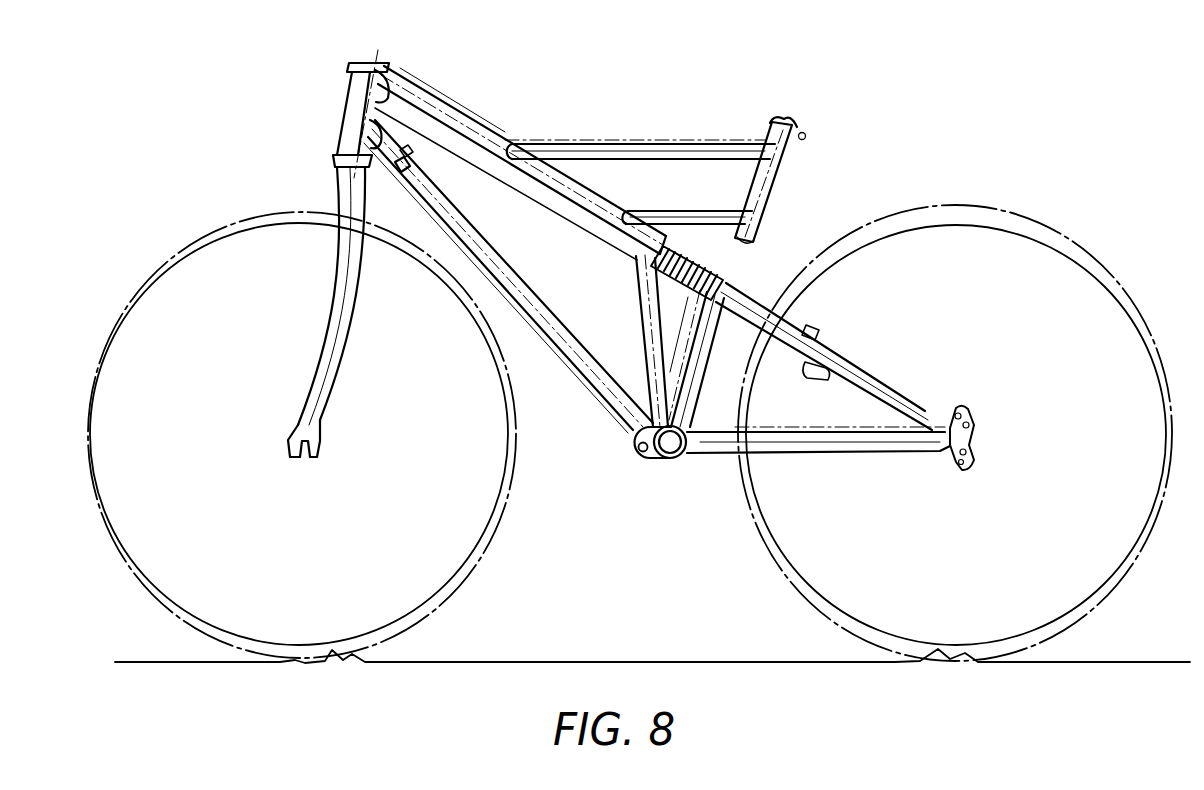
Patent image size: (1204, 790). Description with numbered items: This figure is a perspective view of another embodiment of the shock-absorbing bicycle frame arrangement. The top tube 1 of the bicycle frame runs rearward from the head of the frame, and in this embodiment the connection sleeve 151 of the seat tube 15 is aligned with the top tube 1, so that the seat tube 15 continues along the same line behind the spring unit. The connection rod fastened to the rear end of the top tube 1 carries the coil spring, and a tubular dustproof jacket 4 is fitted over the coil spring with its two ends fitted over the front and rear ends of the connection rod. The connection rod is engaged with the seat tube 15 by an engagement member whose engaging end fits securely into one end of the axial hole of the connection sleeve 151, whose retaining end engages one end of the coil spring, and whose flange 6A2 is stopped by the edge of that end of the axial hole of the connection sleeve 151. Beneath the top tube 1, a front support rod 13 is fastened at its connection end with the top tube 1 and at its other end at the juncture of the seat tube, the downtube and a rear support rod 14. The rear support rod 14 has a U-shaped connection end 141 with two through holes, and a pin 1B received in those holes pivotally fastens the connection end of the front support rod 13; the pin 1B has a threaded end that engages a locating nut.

The top tube 1 is at (467, 133).
The front support rod 13 is at (522, 295).
The dustproof jacket 4 is at (660, 341).
The flange 6A2 is at (712, 250).
The connection sleeve 151 is at (722, 280).
The seat tube 15 is at (880, 364).
The rear support rod 14 is at (714, 450).
The U-shaped connection end 141 is at (652, 458).
The pin 1B is at (633, 455).